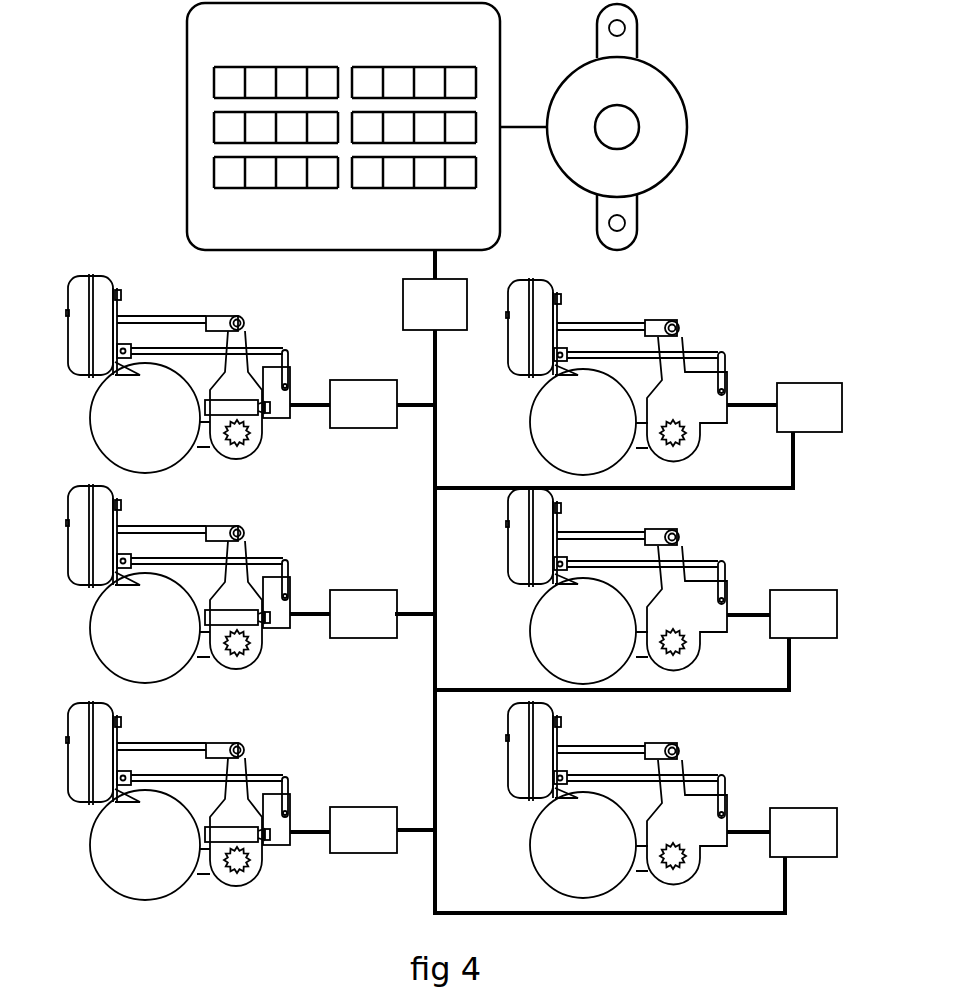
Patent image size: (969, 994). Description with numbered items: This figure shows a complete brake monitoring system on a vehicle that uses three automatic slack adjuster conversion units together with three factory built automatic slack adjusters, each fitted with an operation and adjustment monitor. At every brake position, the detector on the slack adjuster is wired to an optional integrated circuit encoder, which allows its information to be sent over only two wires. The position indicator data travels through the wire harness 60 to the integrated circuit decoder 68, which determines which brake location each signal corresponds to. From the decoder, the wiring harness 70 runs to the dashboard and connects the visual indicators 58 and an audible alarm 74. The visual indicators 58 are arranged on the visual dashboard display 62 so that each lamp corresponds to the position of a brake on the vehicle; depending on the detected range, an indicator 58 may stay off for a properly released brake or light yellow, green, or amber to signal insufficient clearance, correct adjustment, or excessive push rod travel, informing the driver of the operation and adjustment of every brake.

The visual indicator 58 is at (410, 175).
The wire harness 60 is at (435, 500).
The visual dashboard display 62 is at (203, 173).
The integrated circuit decoder 68 is at (403, 310).
The wiring harness, decoder to visual dashboard display 70 is at (433, 270).
The audible alarm 74 is at (683, 100).